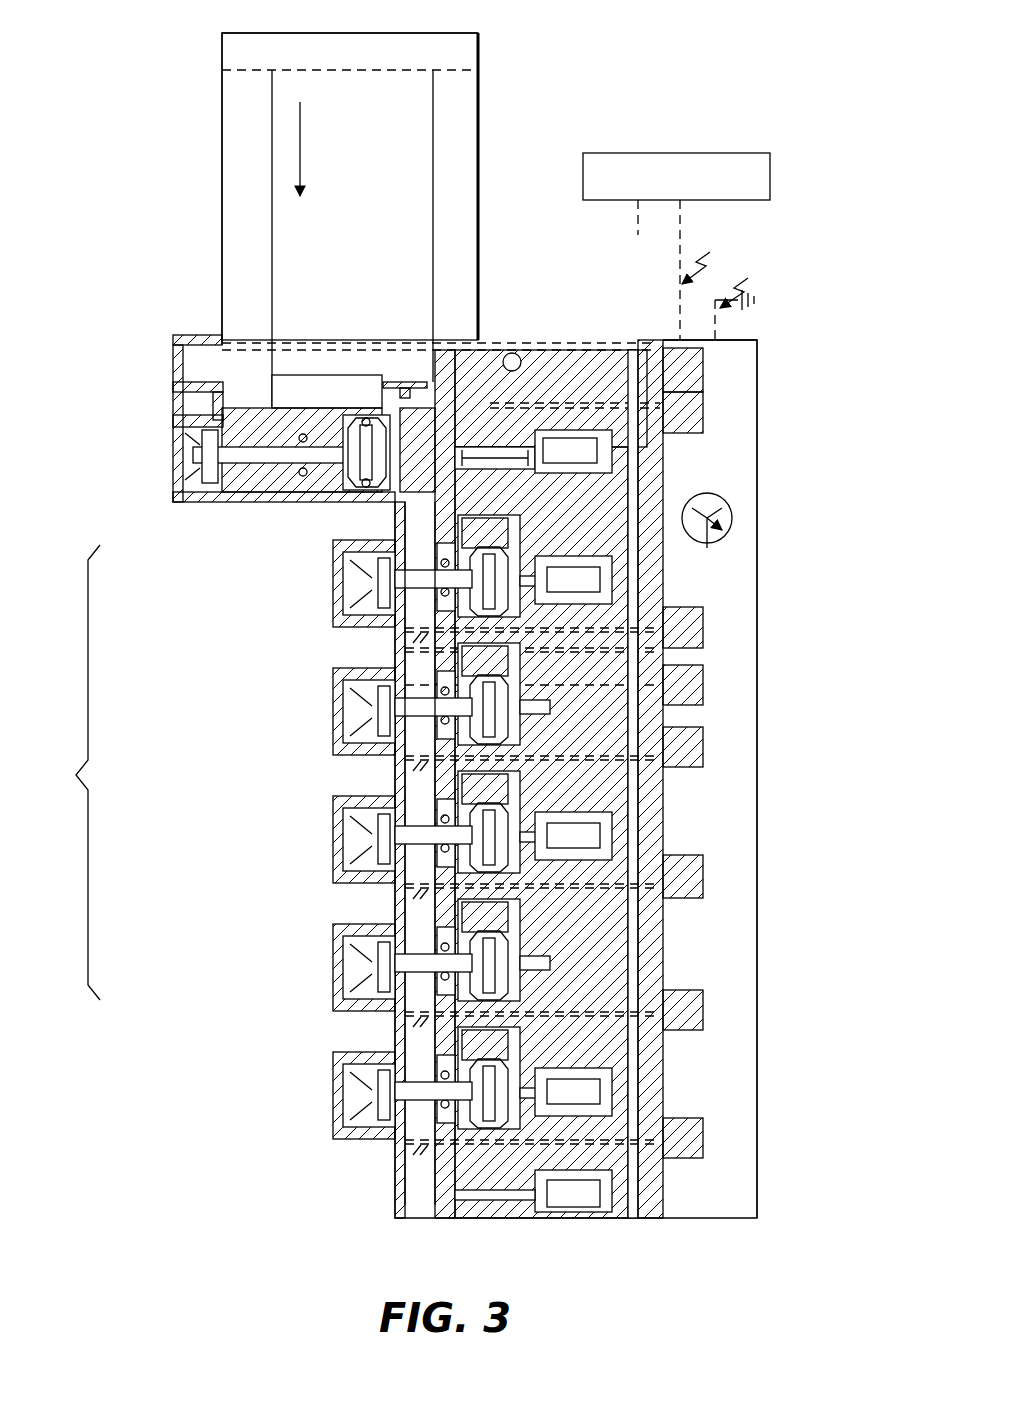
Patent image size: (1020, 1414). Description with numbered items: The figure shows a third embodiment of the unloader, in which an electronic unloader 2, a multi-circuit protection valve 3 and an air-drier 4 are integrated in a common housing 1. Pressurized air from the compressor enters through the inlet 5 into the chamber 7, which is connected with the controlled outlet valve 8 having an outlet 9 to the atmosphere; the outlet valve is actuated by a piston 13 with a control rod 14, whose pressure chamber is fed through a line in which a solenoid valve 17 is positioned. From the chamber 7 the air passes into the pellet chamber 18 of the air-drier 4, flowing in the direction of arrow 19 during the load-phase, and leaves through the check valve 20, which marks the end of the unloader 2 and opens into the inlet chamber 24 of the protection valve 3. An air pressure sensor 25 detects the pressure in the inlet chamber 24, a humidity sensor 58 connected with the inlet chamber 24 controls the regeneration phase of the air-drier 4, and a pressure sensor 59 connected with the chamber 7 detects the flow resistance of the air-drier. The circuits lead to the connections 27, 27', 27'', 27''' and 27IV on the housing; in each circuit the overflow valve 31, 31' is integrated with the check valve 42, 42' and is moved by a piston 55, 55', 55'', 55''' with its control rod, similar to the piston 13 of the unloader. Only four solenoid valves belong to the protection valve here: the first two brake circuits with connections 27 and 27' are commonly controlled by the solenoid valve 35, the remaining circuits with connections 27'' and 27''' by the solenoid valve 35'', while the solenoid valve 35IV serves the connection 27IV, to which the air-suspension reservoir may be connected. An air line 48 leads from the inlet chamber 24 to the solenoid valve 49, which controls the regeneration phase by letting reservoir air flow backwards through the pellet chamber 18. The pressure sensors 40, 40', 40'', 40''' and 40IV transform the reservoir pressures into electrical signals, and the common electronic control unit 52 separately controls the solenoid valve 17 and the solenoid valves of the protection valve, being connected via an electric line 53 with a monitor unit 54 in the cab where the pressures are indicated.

The common housing 1 is at (198, 338).
The electronic unloader 2 is at (150, 421).
The multi-circuit protection valve 3 is at (77, 772).
The air-drier 4 is at (196, 148).
The inlet 5 is at (182, 360).
The chamber 7 is at (252, 211).
The controlled outlet valve 8 is at (155, 503).
The outlet 9 is at (190, 455).
The piston 13 is at (358, 470).
The control rod 14 is at (248, 456).
The 3/2-way solenoid valve 17 is at (567, 430).
The pellet chamber 18 is at (393, 120).
The arrow 19 is at (301, 135).
The check valve 20 is at (408, 376).
The inlet chamber 24 is at (410, 650).
The air pressure sensor 25 is at (698, 415).
The connection 27 is at (329, 583).
The connection 27' is at (328, 711).
The connection 27'' is at (328, 839).
The connection 27''' is at (327, 967).
The connection 27IV is at (345, 1096).
The overflow valve 31 is at (457, 566).
The overflow valve 31' is at (527, 701).
The solenoid valve 35 is at (634, 499).
The solenoid valve 35'' is at (696, 785).
The solenoid valve 35IV is at (575, 1068).
The pressure sensor 40 is at (733, 608).
The pressure sensor 40' is at (741, 730).
The pressure sensor 40'' is at (745, 863).
The pressure sensor 40''' is at (748, 989).
The pressure sensor 40IV is at (686, 1137).
The check valve 42 is at (314, 593).
The check valve 42' is at (312, 721).
The air line 48 is at (495, 1206).
The solenoid valve 49 is at (582, 1219).
The electronic control unit 52 is at (735, 468).
The electric line 53 is at (682, 258).
The monitor unit 54 is at (692, 160).
The piston 55 is at (604, 581).
The piston 55' is at (664, 679).
The piston 55'' is at (564, 835).
The piston 55''' is at (567, 963).
The humidity sensor 58 is at (698, 680).
The pressure sensor 59 is at (698, 378).